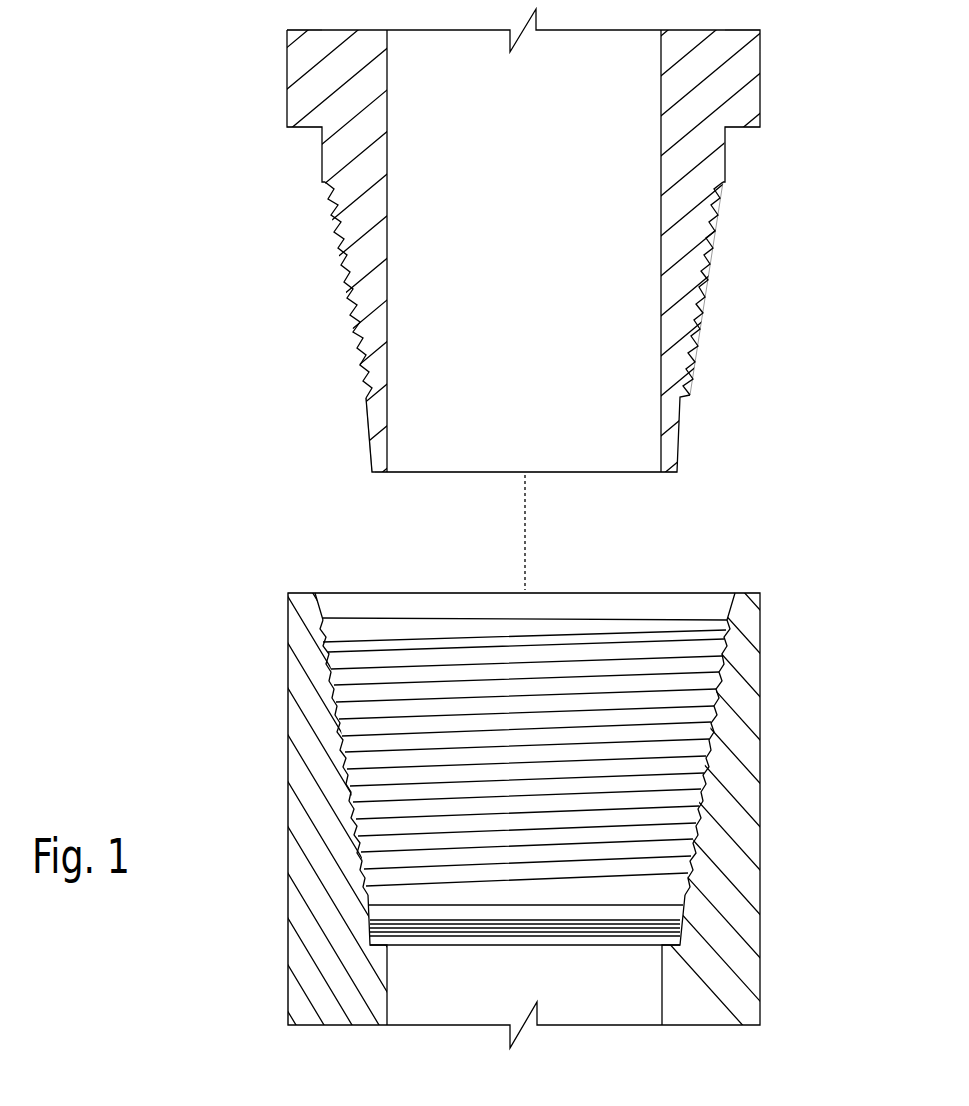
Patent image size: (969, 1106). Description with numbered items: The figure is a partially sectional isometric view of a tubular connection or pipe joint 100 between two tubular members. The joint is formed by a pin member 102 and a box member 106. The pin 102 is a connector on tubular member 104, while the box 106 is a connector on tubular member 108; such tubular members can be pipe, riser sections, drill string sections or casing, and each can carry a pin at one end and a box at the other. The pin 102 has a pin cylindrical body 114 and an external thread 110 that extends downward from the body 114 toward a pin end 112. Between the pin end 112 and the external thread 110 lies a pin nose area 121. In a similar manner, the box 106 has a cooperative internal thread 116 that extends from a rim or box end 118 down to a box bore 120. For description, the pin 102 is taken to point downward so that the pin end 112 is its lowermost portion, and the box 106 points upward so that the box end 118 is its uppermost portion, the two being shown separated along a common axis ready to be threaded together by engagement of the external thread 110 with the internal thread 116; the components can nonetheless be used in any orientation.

The pipe joint 100 is at (258, 498).
The pin member 102 is at (725, 292).
The tubular member 104 is at (287, 70).
The box member 106 is at (782, 851).
The tubular member 108 is at (288, 940).
The external thread 110 is at (715, 222).
The pin end 112 is at (668, 476).
The pin cylindrical body 114 is at (740, 124).
The internal thread 116 is at (700, 765).
The box end 118 is at (739, 592).
The box bore 120 is at (662, 984).
The pin nose area 121 is at (362, 416).